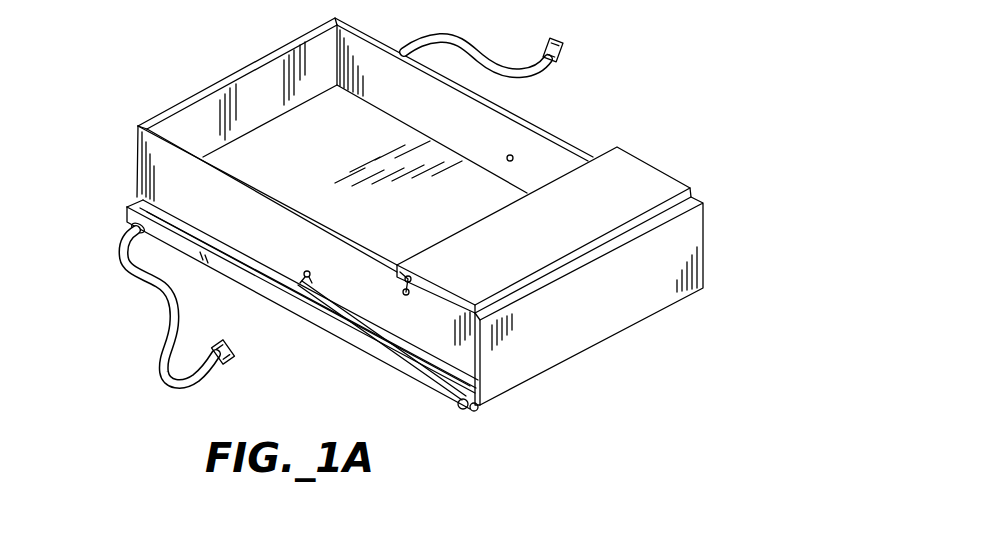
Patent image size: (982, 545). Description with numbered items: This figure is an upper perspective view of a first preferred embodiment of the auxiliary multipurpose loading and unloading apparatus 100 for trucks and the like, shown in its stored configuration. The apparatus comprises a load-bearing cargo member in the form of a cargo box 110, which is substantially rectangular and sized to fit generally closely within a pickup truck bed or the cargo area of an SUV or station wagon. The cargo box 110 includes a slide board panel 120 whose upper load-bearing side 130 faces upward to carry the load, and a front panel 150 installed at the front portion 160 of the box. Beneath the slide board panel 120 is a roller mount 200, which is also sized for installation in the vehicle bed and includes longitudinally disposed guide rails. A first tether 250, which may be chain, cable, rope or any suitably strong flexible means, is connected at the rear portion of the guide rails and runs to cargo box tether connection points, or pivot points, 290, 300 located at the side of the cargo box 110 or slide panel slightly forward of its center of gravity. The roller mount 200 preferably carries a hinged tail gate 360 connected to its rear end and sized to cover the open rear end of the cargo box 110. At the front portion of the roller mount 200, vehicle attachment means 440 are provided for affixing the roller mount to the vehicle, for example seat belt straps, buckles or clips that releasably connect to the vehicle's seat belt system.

The auxiliary multipurpose loading and unloading apparatus 100 is at (719, 110).
The cargo box 110 is at (270, 42).
The slide board panel 120 is at (397, 133).
The upper load-bearing side 130 is at (318, 163).
The front panel 150 is at (207, 88).
The front portion 160 is at (123, 147).
The roller mount 200 is at (162, 240).
The first tether 250 is at (377, 340).
The cargo box tether connection point 290 is at (287, 290).
The cargo box tether connection point 300 is at (510, 156).
The hinged tail gate 360 is at (695, 225).
The vehicle attachment means 440 is at (162, 362).